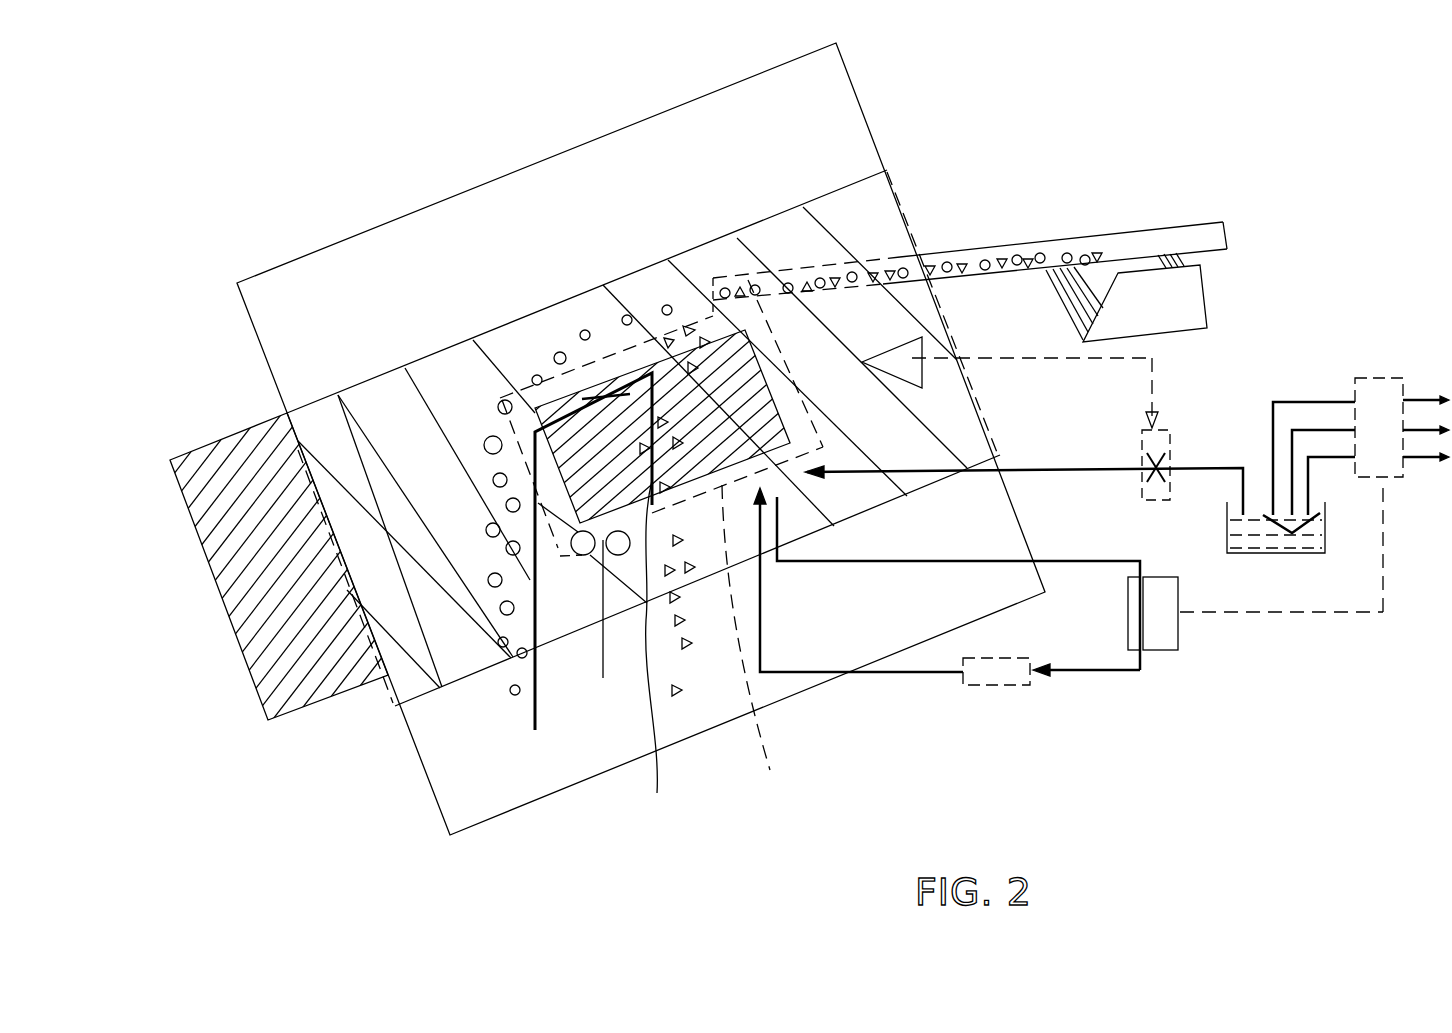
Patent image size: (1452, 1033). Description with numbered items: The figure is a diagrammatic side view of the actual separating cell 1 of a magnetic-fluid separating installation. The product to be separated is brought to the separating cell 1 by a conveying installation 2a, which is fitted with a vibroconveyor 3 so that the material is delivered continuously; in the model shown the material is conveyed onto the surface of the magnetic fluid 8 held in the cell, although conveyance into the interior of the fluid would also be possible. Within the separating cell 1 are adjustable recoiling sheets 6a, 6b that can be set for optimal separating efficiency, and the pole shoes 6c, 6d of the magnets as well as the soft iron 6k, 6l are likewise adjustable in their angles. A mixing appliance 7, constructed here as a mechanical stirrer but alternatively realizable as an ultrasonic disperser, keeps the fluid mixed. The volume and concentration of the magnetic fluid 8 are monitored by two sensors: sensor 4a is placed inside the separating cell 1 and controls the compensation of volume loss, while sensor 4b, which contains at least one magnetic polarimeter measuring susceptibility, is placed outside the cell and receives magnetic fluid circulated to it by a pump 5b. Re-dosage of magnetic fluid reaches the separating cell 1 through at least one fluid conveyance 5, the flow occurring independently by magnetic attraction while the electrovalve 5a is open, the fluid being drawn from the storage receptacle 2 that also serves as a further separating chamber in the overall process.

The separating cell 1 is at (678, 165).
The storage receptacle 2 is at (1270, 550).
The conveying installation 2a is at (978, 248).
The vibroconveyor 3 is at (1187, 300).
The sensor 4a is at (925, 372).
The sensor 4b is at (1172, 630).
The fluid conveyance 5 is at (1063, 474).
The electrovalve 5a is at (1160, 465).
The dosing pump 5b is at (1388, 480).
The recoiling sheet 6a is at (540, 722).
The recoiling sheet 6b is at (657, 653).
The pole shoe 6c is at (751, 643).
The pole shoe 6d is at (669, 541).
The soft iron 6k is at (412, 627).
The soft iron 6l is at (354, 651).
The mixing appliance 7 is at (600, 672).
The magnetic fluid 8 is at (582, 368).